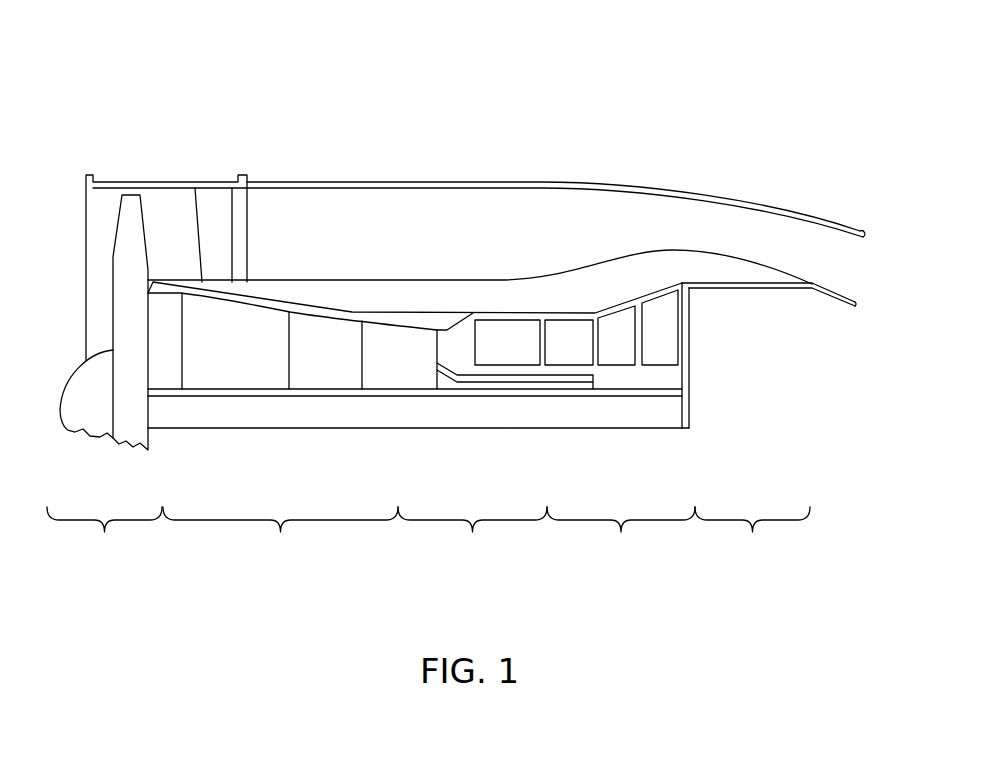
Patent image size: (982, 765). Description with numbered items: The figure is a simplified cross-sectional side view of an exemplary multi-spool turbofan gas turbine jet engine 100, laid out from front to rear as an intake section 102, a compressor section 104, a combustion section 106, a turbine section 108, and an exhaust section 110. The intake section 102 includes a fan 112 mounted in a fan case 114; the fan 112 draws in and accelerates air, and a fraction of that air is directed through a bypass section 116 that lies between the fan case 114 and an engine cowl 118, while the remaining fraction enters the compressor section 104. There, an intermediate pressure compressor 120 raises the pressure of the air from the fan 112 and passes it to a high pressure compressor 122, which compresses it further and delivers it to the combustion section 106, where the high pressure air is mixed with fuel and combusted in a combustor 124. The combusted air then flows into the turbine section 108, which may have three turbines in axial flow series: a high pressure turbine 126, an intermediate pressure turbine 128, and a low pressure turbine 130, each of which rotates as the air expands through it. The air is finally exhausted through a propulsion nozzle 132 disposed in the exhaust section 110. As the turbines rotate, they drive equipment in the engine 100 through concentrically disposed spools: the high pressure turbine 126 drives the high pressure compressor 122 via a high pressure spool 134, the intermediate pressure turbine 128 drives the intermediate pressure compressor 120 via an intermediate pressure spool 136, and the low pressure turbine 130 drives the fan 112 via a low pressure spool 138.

The multi-spool turbofan gas turbine jet engine 100 is at (497, 309).
The intake section 102 is at (104, 537).
The compressor section 104 is at (280, 537).
The combustion section 106 is at (472, 537).
The turbine section 108 is at (621, 537).
The exhaust section 110 is at (752, 537).
The fan 112 is at (123, 283).
The fan case 114 is at (173, 182).
The bypass section 116 is at (403, 200).
The engine cowl 118 is at (467, 278).
The intermediate pressure compressor 120 is at (245, 378).
The high pressure compressor 122 is at (400, 378).
The combustor 124 is at (517, 330).
The high pressure turbine 126 is at (573, 333).
The intermediate pressure turbine 128 is at (622, 320).
The low pressure turbine 130 is at (670, 313).
The propulsion nozzle 132 is at (837, 348).
The high pressure spool 134 is at (477, 376).
The intermediate pressure spool 136 is at (552, 388).
The low pressure spool 138 is at (613, 420).